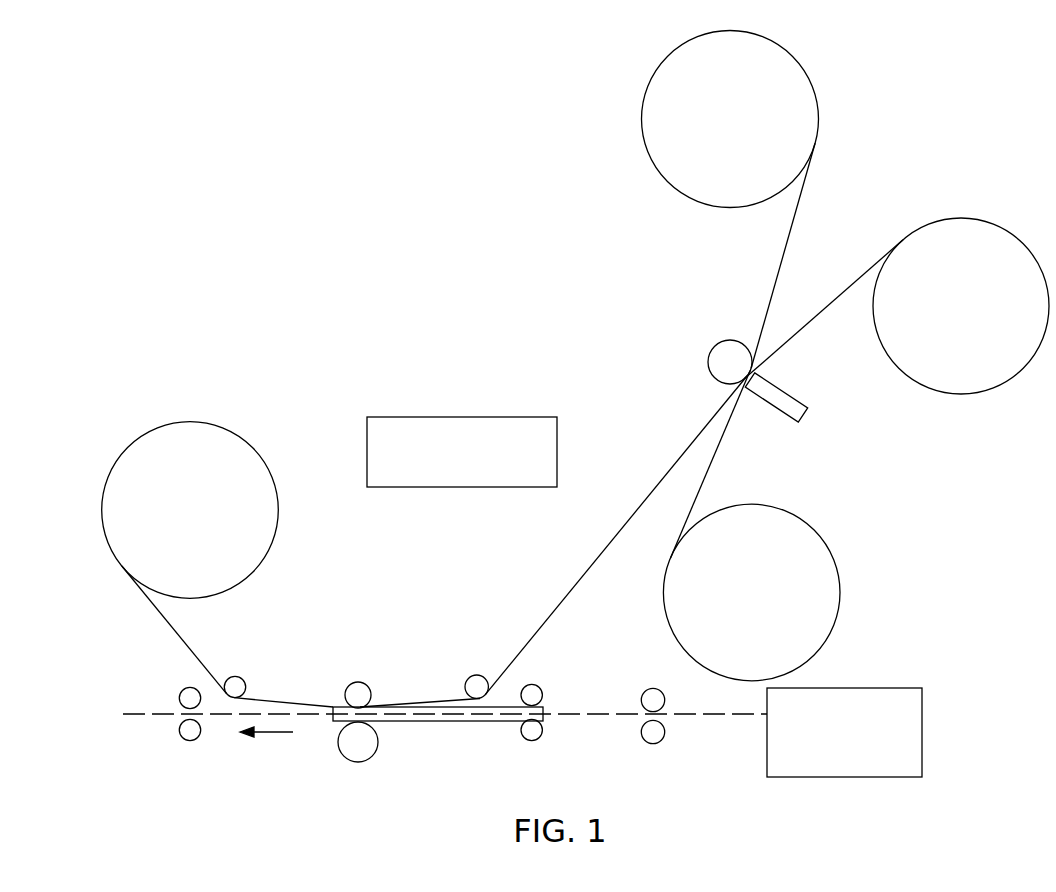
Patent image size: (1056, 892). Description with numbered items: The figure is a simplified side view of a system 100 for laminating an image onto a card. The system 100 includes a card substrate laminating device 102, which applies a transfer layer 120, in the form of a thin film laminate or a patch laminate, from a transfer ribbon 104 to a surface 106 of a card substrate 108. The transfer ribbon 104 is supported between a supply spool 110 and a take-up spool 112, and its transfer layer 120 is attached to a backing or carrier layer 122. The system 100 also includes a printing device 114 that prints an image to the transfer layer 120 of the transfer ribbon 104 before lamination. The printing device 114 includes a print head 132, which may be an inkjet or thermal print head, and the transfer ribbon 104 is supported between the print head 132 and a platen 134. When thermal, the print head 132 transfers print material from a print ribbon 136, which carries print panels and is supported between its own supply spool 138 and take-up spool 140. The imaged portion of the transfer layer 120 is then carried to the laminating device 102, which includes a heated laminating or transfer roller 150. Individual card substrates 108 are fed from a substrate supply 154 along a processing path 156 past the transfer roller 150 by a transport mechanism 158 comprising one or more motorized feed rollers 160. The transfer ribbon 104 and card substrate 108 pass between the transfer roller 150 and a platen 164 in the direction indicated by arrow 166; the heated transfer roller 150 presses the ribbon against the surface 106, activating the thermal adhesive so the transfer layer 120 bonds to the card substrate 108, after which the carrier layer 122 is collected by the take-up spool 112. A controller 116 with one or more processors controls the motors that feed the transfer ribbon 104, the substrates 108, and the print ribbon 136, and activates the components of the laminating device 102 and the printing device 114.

The system 100 is at (268, 222).
The card substrate laminating device 102 is at (403, 595).
The transfer ribbon 104 is at (781, 264).
The surface 106 is at (508, 703).
The card substrate 108 is at (453, 722).
The supply spool 110 is at (805, 83).
The take-up spool 112 is at (160, 433).
The printing device 114 is at (855, 440).
The controller 116 is at (402, 417).
The transfer layer 120 is at (792, 230).
The carrier layer 122 is at (178, 636).
The print head 132 is at (794, 418).
The platen 134 is at (716, 354).
The print ribbon 136 is at (808, 327).
The supply spool 138 is at (955, 388).
The take-up spool 140 is at (813, 545).
The transfer roller 150 is at (356, 682).
The substrate supply 154 is at (882, 688).
The processing path 156 is at (137, 712).
The transport mechanism 158 is at (668, 767).
The motorized feed rollers 160 is at (187, 738).
The platen 164 is at (350, 755).
The arrow 166 is at (272, 733).